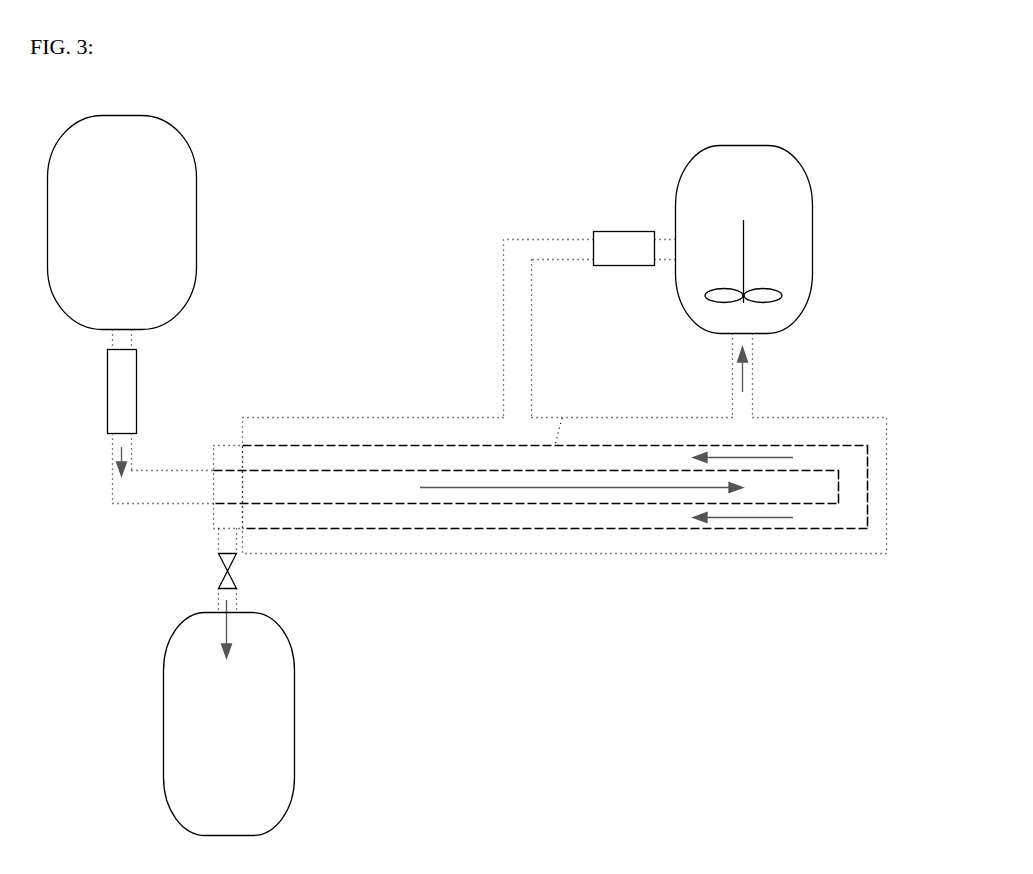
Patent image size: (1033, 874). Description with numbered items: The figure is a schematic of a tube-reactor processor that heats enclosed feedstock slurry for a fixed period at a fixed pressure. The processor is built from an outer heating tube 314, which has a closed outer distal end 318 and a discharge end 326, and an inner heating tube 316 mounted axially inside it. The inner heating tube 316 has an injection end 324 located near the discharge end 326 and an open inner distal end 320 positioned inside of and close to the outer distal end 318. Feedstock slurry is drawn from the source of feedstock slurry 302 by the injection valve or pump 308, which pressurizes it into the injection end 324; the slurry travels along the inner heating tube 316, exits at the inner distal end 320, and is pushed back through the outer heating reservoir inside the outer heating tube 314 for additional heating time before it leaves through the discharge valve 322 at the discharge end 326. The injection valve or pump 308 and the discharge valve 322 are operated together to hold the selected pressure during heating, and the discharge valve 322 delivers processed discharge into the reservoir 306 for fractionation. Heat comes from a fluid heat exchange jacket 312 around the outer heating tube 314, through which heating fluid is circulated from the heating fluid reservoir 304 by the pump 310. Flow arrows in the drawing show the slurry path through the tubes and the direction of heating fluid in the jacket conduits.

The source of feedstock slurry 302 is at (122, 233).
The heating fluid reservoir 304 is at (744, 282).
The reservoir 306 is at (229, 724).
The injection valve or pump 308 is at (118, 391).
The pump 310 is at (590, 296).
The fluid heat exchange jacket 312 is at (482, 543).
The outer heating tube 314 is at (398, 447).
The inner heating tube 316 is at (354, 488).
The outer distal end 318 is at (868, 465).
The inner distal end 320 is at (838, 470).
The discharge valve 322 is at (207, 571).
The injection end 324 is at (120, 487).
The discharge end 326 is at (220, 455).